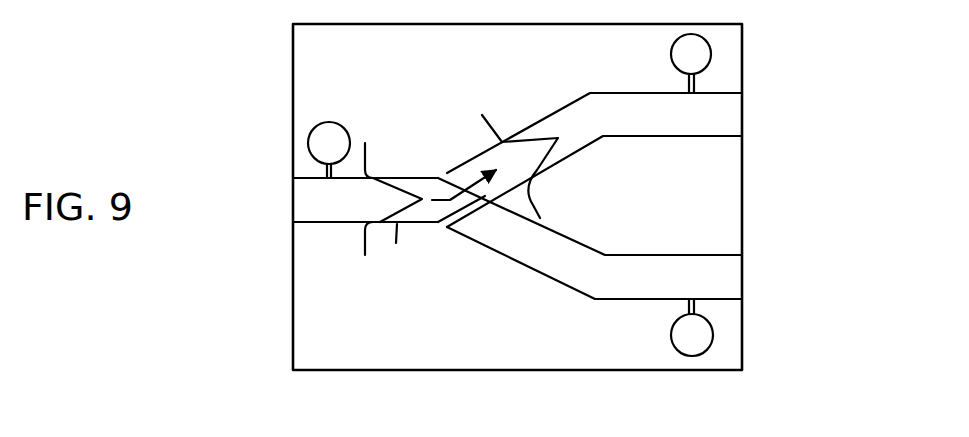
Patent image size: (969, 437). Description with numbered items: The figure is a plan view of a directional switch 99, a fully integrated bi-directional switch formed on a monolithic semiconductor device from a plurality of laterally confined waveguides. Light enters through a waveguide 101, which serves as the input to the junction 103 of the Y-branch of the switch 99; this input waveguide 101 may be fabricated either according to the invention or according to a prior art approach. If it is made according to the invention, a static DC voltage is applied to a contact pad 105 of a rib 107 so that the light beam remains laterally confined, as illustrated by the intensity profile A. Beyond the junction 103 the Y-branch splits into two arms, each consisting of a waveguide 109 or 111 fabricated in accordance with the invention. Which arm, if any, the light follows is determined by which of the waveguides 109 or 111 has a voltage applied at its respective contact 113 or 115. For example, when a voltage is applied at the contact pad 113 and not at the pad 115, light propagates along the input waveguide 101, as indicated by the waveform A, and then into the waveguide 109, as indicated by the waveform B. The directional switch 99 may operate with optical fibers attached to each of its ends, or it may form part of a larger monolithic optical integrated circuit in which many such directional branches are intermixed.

The directional switch 99 is at (290, 58).
The waveguide 101 is at (382, 175).
The junction 103 is at (437, 228).
The contact pad 105 is at (336, 124).
The rib 107 is at (333, 216).
The waveguide 109 is at (539, 115).
The waveguide 111 is at (584, 239).
The contact pad 113 is at (670, 52).
The contact pad 115 is at (670, 337).
The intensity profile A is at (389, 248).
The waveform B is at (540, 153).